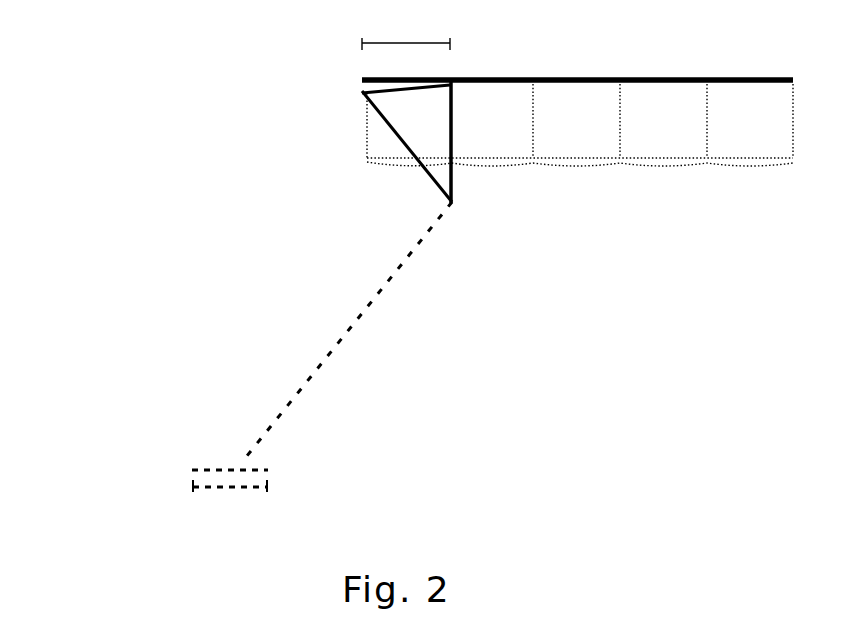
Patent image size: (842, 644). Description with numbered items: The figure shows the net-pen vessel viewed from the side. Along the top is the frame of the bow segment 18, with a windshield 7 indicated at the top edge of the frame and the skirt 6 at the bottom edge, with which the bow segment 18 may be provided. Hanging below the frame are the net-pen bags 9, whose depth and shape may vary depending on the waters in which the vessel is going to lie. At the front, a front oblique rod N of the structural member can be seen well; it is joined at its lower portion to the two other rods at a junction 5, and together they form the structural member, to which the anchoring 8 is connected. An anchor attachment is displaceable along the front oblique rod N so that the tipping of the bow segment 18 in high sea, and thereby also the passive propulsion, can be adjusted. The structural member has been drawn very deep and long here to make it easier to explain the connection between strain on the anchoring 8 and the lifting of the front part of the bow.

The junction 5 is at (444, 202).
The skirt 6 is at (358, 94).
The windshield 7 is at (348, 77).
The anchoring 8 is at (360, 283).
The net-pen bags 9 is at (749, 171).
The bow segment 18 is at (435, 43).
The front oblique rod N is at (402, 140).